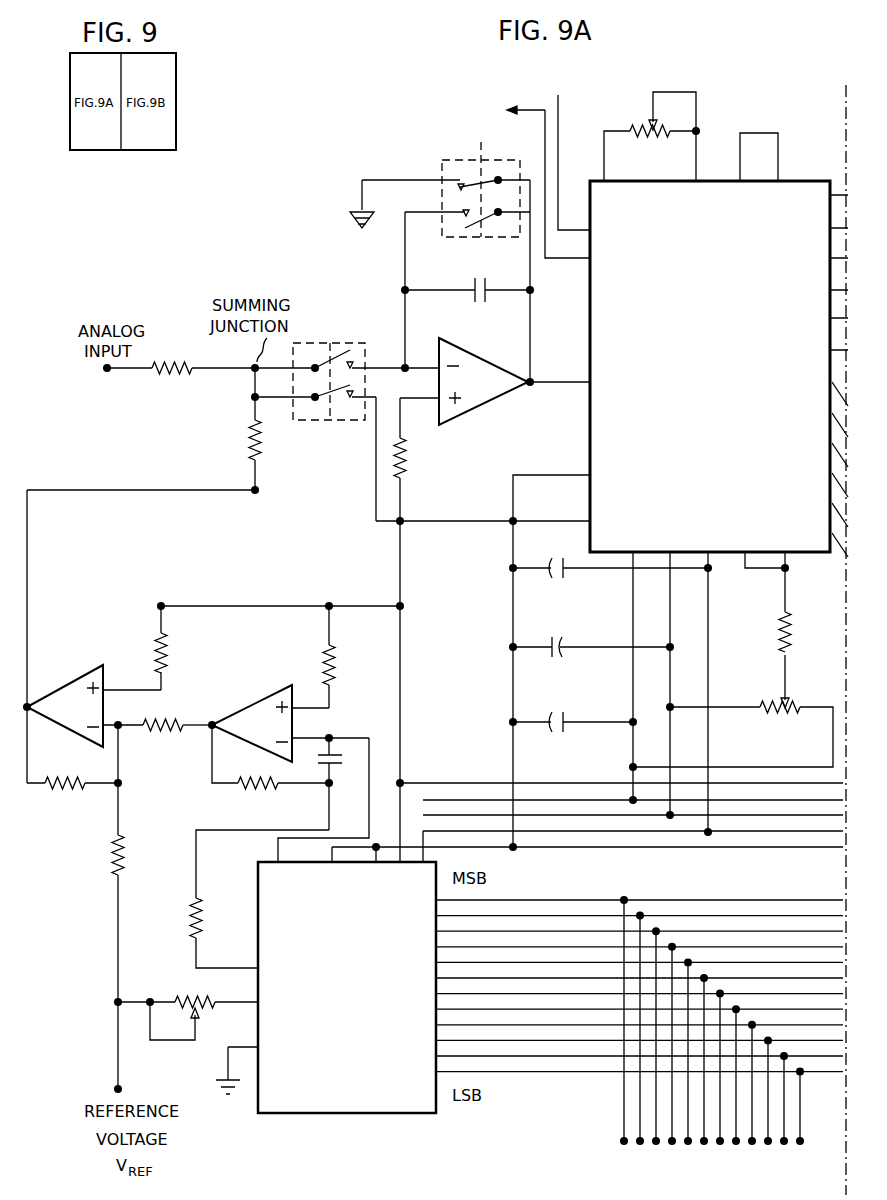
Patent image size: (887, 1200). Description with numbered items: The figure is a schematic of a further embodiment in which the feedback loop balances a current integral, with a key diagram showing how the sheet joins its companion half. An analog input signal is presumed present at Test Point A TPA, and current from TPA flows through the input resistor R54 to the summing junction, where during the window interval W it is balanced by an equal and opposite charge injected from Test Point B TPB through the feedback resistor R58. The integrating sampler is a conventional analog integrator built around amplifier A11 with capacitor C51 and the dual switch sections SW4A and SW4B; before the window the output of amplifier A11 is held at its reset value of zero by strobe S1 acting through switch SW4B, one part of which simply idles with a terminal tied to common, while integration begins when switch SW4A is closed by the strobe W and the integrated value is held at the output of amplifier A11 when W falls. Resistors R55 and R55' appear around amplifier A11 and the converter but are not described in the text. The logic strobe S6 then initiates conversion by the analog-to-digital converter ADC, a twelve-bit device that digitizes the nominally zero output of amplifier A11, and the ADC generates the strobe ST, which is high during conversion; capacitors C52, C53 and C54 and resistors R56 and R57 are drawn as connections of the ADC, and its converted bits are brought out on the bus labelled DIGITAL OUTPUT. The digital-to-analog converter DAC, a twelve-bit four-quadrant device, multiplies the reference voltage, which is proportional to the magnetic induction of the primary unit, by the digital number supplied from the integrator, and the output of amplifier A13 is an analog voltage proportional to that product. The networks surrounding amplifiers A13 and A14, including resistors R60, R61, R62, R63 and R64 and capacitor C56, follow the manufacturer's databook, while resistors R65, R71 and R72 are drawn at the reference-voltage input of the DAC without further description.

The Test Point A TPA is at (110, 384).
The input resistor R54 is at (172, 383).
The feedback resistor R58 is at (234, 440).
The Test Point B TPB is at (271, 493).
The switch SW4A is at (330, 420).
The window interval strobe W is at (330, 443).
The switch SW4B is at (440, 189).
The strobe S1 is at (482, 180).
The strobe ST is at (536, 177).
The logic strobe S6 is at (570, 152).
The integrating capacitor C51 is at (467, 296).
The amplifier A11 is at (495, 381).
The resistor R55 is at (419, 458).
The trimmer resistor R55' is at (651, 143).
The analog-to-digital converter ADC is at (719, 369).
The capacitor C52 is at (610, 574).
The capacitor C53 is at (591, 650).
The capacitor C54 is at (573, 726).
The resistor R56 is at (766, 632).
The potentiometer R57 is at (731, 734).
The amplifier A13 is at (92, 706).
The resistor R60 is at (178, 653).
The resistor R62 is at (165, 739).
The resistor R61 is at (74, 797).
The resistor R71 is at (135, 855).
The amplifier A14 is at (290, 723).
The resistor R64 is at (346, 665).
The capacitor C56 is at (345, 784).
The resistor R63 is at (272, 771).
The resistor R65 is at (214, 918).
The digital-to-analog converter DAC is at (347, 987).
The potentiometer R72 is at (195, 992).
The digital output bus DIGITAL OUTPUT is at (639, 1037).